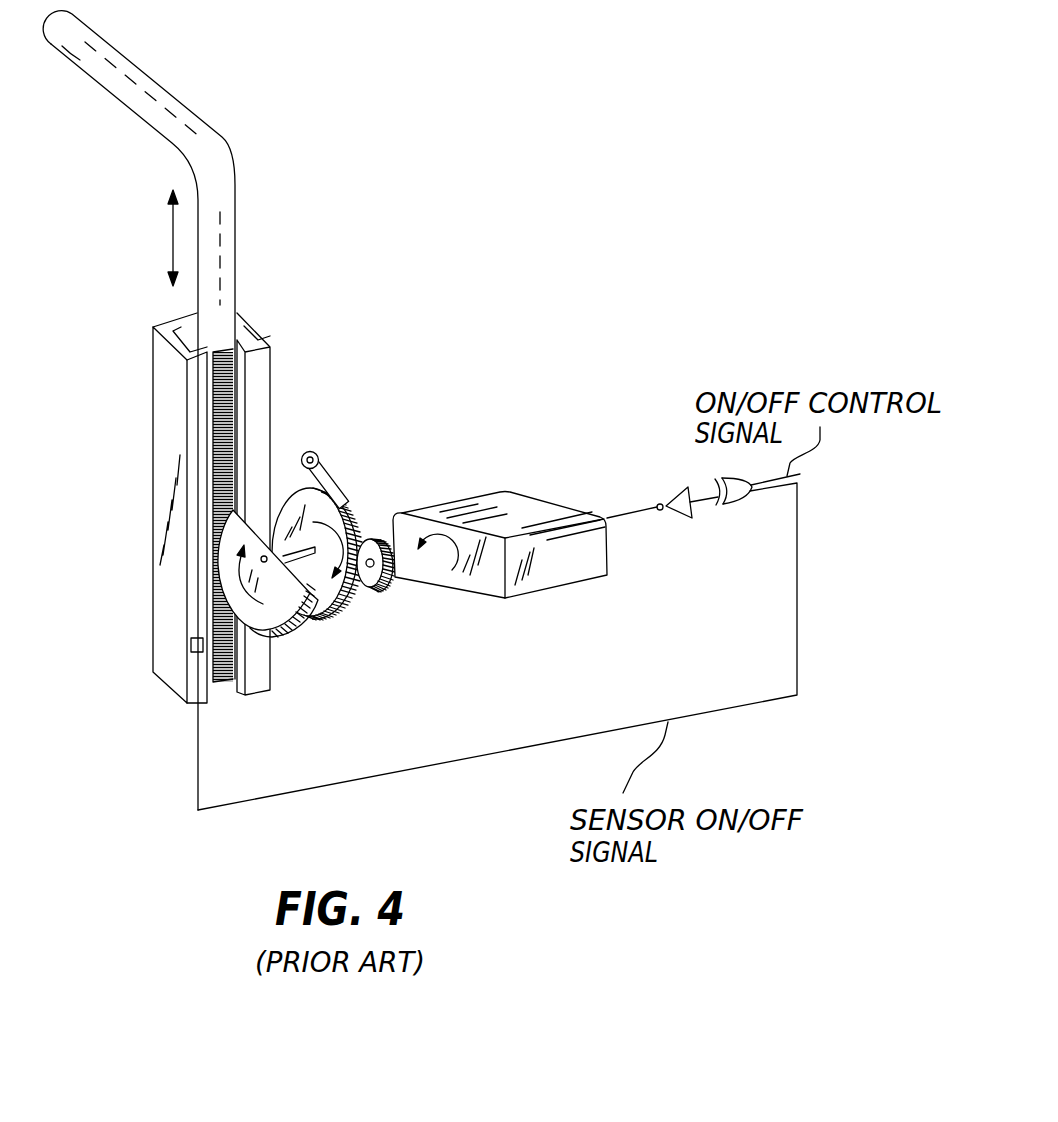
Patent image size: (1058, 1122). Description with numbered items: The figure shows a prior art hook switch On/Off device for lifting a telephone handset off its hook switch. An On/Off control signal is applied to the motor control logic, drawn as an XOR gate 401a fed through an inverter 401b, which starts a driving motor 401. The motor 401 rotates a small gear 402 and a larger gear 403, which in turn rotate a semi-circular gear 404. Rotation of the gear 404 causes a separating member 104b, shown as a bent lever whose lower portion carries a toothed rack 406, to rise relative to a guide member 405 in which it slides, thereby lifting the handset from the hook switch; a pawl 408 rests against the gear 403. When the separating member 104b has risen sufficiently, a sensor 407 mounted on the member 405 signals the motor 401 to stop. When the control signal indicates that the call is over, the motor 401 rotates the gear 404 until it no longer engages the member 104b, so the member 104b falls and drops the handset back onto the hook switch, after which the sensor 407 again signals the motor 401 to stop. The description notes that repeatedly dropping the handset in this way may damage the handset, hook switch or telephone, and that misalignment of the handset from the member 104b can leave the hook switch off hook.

The separating member 104b is at (200, 135).
The member 405 is at (167, 415).
The rack 406 is at (233, 430).
The sensor 407 is at (190, 647).
The pawl 408 is at (327, 458).
The semi-circular gear 404 is at (283, 630).
The gear 403 is at (333, 598).
The gear 402 is at (387, 583).
The XOR gate 401 is at (787, 566).
The exclusive OR gate 401a is at (735, 503).
The inverter 401b is at (678, 513).